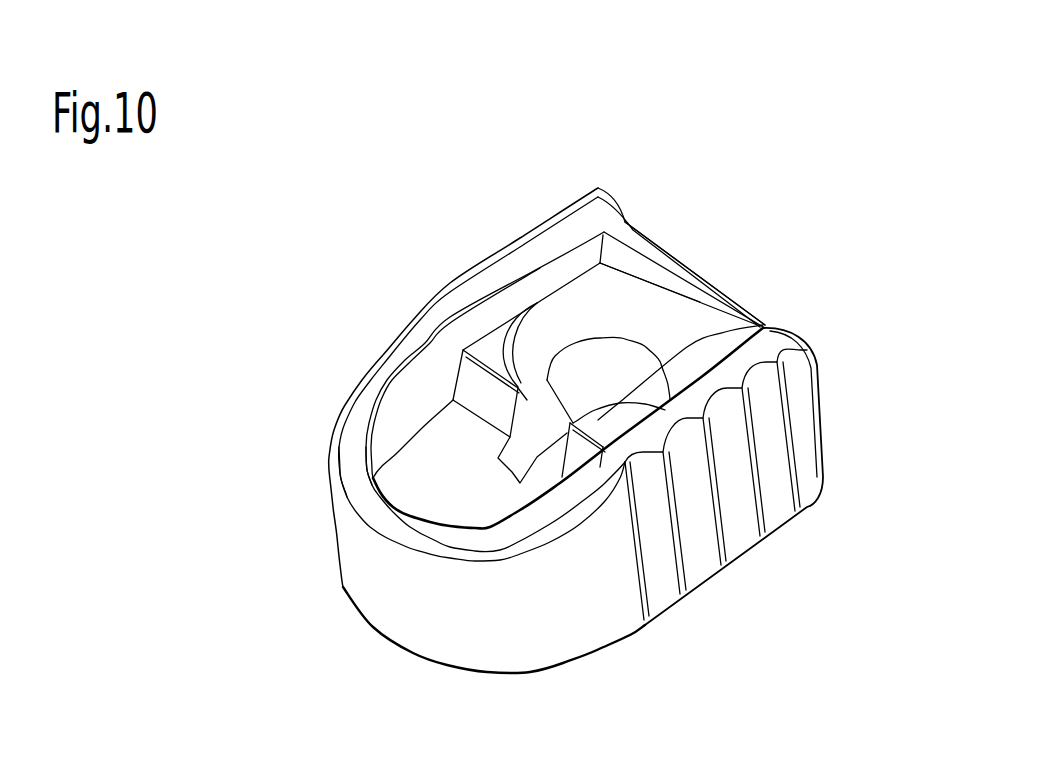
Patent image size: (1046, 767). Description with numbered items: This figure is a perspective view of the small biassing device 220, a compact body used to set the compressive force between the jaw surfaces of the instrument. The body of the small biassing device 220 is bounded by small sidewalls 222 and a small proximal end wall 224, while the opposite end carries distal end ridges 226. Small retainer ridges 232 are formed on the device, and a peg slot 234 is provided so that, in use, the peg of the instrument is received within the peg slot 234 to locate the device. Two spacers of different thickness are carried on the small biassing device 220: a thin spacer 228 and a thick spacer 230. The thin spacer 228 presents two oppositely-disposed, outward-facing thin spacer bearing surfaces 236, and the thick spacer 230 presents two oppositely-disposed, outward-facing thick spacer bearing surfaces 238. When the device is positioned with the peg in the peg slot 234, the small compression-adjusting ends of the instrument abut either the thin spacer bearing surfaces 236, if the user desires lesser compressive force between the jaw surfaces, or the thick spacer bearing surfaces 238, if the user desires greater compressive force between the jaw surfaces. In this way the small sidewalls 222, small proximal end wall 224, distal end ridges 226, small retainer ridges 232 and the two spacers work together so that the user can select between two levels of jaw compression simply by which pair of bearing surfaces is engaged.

The small biassing device 220 is at (525, 118).
The small sidewalls 222 is at (440, 307).
The distal end ridges 226 is at (693, 277).
The small proximal end wall 224 is at (383, 525).
The thick spacer 230 is at (610, 303).
The small retainer ridges 232 is at (577, 422).
The thin spacer 228 is at (412, 438).
The peg slot 234 is at (497, 490).
The thin spacer bearing surfaces 236 is at (430, 497).
The thick spacer bearing surfaces 238 is at (687, 350).